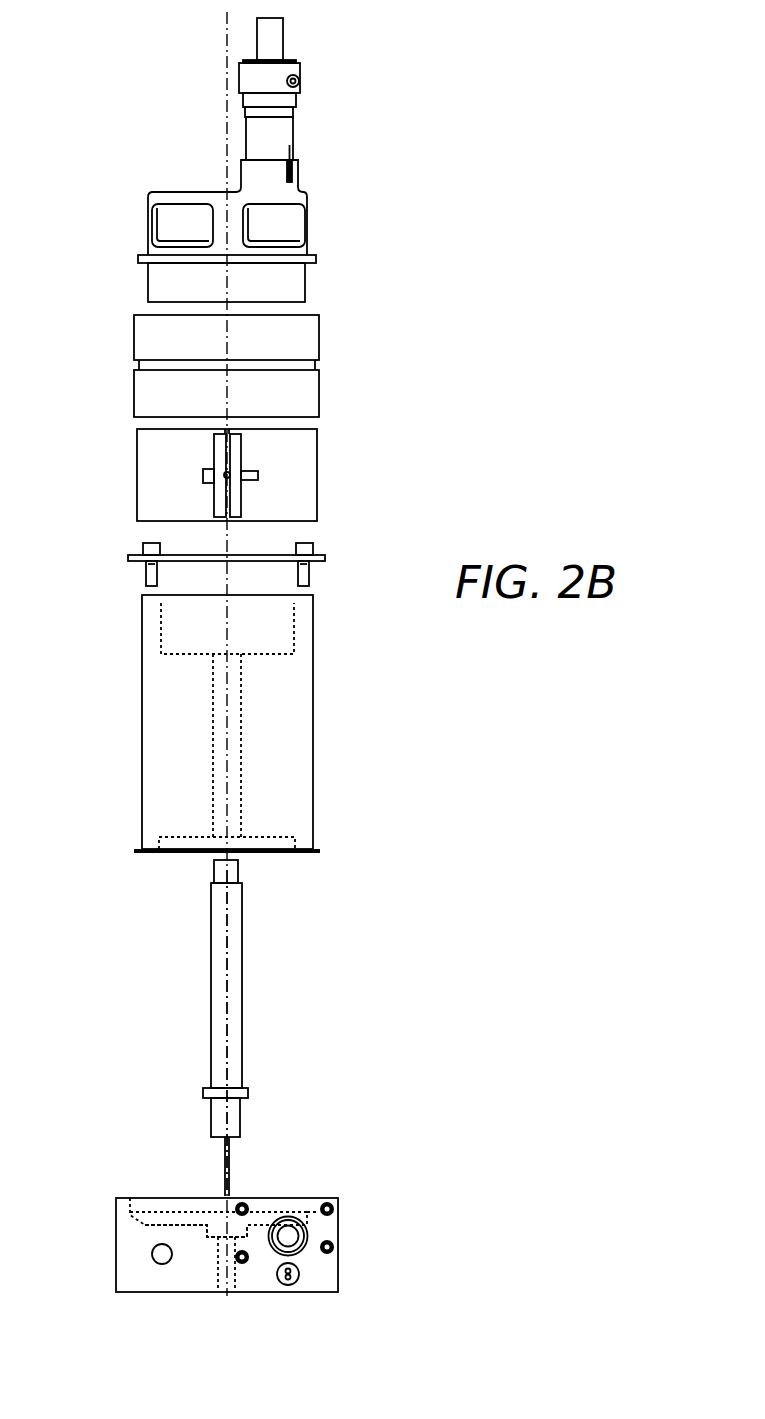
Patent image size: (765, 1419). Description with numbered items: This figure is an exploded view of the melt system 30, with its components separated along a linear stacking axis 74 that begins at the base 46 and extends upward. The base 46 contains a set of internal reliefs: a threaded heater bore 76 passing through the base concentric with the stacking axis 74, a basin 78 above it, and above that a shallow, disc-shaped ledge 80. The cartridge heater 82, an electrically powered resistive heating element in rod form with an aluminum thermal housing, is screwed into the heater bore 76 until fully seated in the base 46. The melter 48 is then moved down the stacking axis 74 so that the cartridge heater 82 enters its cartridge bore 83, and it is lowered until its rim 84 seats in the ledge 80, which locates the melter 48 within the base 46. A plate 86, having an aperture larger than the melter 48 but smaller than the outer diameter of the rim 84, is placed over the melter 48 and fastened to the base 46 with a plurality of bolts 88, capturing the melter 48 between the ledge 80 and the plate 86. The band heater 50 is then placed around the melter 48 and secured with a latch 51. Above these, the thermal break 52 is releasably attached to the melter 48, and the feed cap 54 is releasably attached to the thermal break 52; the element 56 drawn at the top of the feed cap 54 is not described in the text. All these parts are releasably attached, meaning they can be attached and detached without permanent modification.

The melt system 30 is at (458, 283).
The base 46 is at (338, 1248).
The melter 48 is at (142, 723).
The band heater 50 is at (137, 462).
The latch 51 is at (241, 462).
The thermal break 52 is at (134, 350).
The feed cap 54 is at (160, 190).
The cap assembly 56 is at (296, 100).
The stacking axis 74 is at (229, 1032).
The heater bore 76 is at (218, 1273).
The basin 78 is at (145, 1225).
The ledge 80 is at (153, 1212).
The cartridge heater 82 is at (212, 985).
The cartridge bore 83 is at (242, 708).
The rim 84 is at (138, 850).
The plate 86 is at (129, 558).
The bolts 88 is at (143, 546).